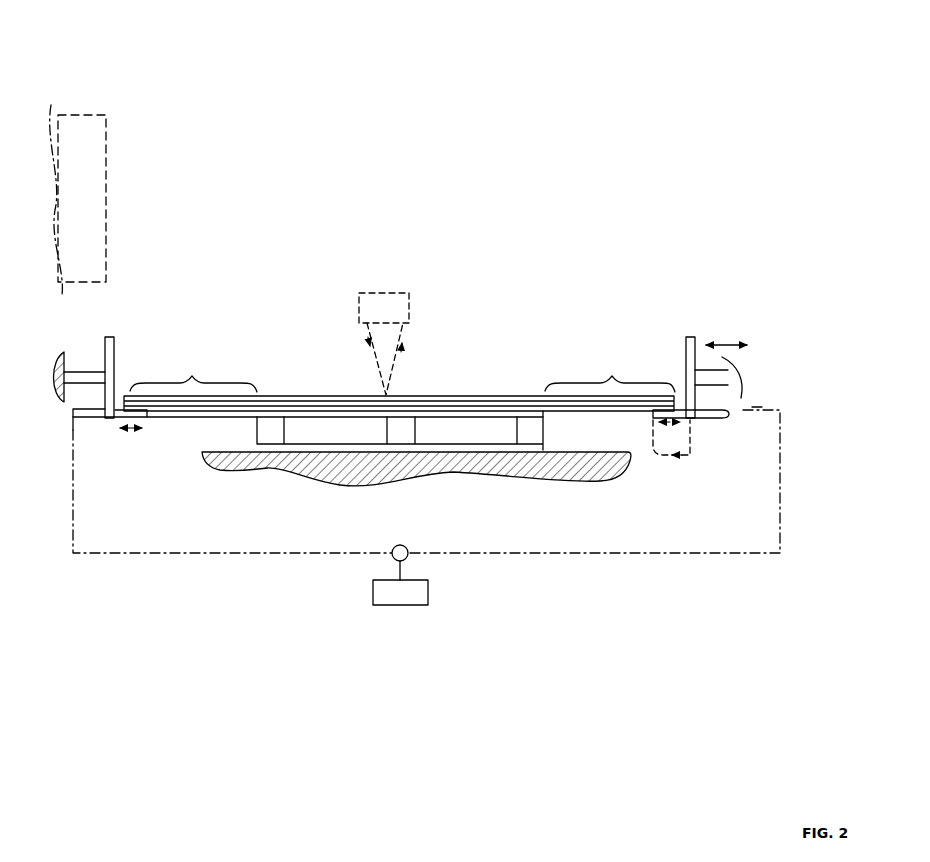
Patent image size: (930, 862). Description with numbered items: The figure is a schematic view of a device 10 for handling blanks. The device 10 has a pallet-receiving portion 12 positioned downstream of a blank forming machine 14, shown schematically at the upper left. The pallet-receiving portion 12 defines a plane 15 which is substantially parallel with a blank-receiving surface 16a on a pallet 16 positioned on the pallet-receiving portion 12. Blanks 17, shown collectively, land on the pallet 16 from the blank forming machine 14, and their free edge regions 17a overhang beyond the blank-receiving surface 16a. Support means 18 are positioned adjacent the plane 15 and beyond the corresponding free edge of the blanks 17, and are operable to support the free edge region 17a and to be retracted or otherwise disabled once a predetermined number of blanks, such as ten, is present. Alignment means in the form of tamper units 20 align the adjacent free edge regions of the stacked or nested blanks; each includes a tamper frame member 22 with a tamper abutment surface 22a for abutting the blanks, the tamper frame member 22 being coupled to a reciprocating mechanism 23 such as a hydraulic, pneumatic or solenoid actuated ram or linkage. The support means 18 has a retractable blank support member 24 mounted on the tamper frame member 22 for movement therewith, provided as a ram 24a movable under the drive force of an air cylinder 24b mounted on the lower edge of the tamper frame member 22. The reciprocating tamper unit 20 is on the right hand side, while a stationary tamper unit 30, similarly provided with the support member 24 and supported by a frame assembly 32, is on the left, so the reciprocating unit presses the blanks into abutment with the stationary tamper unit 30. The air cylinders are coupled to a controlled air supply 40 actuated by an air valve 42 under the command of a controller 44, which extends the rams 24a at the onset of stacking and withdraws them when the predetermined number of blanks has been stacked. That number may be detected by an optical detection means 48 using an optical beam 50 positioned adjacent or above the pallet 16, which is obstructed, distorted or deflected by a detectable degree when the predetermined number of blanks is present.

The device 10 is at (578, 270).
The pallet-receiving portion 12 is at (590, 481).
The blank forming machine 14 is at (68, 114).
The plane 15 is at (760, 406).
The pallet 16 is at (247, 433).
The blank-receiving surface 16a is at (257, 417).
The blanks 17 is at (479, 336).
The free edge region 17a is at (402, 376).
The support means 18 is at (740, 266).
The tamper unit 20 is at (709, 332).
The tamper frame member 22 is at (690, 336).
The tamper abutment surface 22a is at (682, 345).
The reciprocating mechanism 23 is at (750, 367).
The retractable blank support member 24 is at (120, 404).
The ram 24a is at (653, 420).
The air cylinder 24b is at (728, 419).
The stationary tamper unit 30 is at (111, 333).
The frame assembly 32 is at (88, 369).
The controlled air supply 40 is at (293, 586).
The air valve 42 is at (408, 556).
The controller 44 is at (428, 592).
The optical detection means 48 is at (385, 300).
The optical beam 50 is at (363, 342).